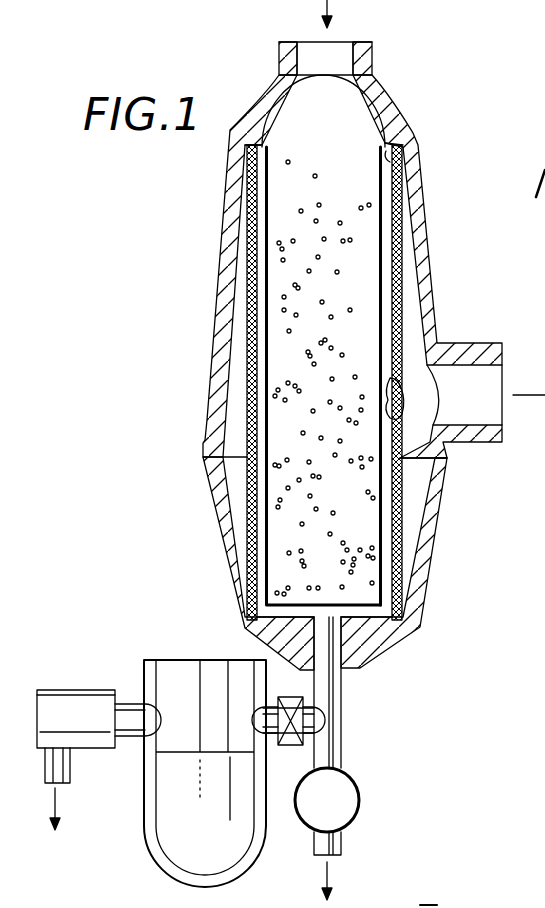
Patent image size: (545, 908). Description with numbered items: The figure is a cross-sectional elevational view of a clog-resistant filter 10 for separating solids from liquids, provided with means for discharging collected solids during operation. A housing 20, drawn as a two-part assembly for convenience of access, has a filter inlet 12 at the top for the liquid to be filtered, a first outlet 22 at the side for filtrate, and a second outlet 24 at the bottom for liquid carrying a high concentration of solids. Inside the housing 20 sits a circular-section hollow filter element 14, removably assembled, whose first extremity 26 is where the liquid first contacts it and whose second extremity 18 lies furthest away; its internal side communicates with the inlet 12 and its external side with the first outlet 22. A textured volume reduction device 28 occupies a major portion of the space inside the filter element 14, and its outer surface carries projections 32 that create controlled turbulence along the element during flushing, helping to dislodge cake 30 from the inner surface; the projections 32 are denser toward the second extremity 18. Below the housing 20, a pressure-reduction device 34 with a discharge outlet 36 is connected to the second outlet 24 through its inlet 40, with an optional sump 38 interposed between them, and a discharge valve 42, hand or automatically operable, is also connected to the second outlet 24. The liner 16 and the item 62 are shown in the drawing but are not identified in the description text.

The clog-resistant filter 10 is at (180, 178).
The filter inlet 12 is at (354, 42).
The hollow filter element 14 is at (252, 348).
The insulating liner 16 is at (267, 389).
The second extremity 18 is at (401, 632).
The housing 20 is at (228, 264).
The first outlet 22 is at (495, 372).
The second outlet 24 is at (360, 667).
The first extremity 26 is at (400, 169).
The textured volume reduction device 28 is at (378, 312).
The cake 30 is at (403, 393).
The projections 32 is at (381, 542).
The pressure-reduction device 34 is at (77, 700).
The discharge outlet 36 is at (60, 765).
The sump 38 is at (173, 855).
The inlet of pressure reducing device 40 is at (130, 702).
The discharge valve 42 is at (352, 802).
The reference numeral 62 is at (293, 904).